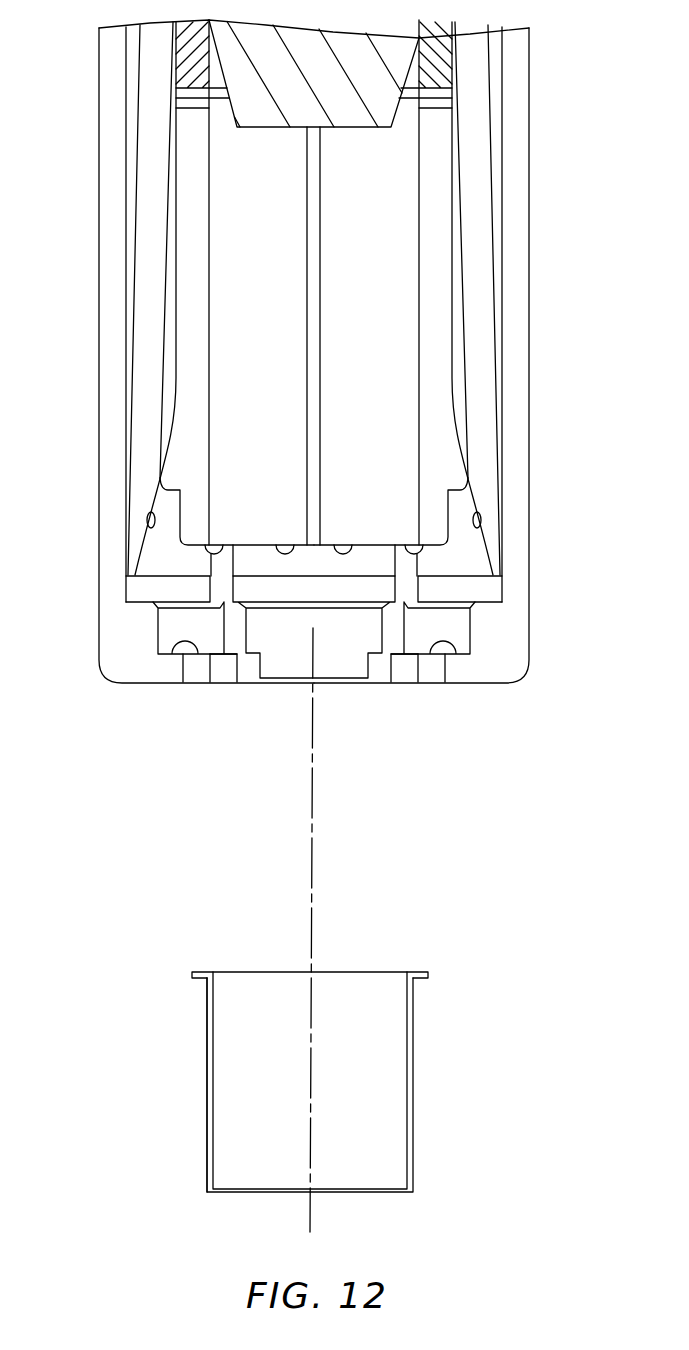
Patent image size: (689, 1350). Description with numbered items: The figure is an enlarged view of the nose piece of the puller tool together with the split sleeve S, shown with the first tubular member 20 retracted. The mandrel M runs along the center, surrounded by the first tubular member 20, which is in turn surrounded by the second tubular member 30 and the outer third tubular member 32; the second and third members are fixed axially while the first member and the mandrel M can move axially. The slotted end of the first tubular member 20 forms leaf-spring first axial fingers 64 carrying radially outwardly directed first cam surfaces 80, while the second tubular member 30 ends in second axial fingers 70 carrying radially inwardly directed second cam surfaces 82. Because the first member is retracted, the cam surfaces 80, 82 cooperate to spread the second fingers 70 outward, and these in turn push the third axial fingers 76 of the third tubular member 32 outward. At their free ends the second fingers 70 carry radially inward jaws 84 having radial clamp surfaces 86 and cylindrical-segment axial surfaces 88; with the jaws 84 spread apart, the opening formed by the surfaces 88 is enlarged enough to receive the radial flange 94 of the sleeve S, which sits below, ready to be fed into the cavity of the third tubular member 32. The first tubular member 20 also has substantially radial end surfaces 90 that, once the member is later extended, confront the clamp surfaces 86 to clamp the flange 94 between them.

The first tubular member 20 is at (432, 234).
The second tubular member 30 is at (197, 235).
The third tubular member 32 is at (113, 176).
The first axial fingers 64 is at (200, 352).
The second axial fingers 70 is at (143, 487).
The third axial fingers 76 is at (145, 523).
The first cam surfaces 80 is at (180, 442).
The second cam surfaces 82 is at (113, 560).
The jaws 84 is at (172, 655).
The radial clamp surfaces 86 is at (206, 657).
The axial surfaces 88 is at (218, 668).
The end surfaces 90 is at (228, 546).
The radial flange 94 is at (202, 970).
The mandrel M is at (350, 113).
The sleeve S is at (413, 1087).